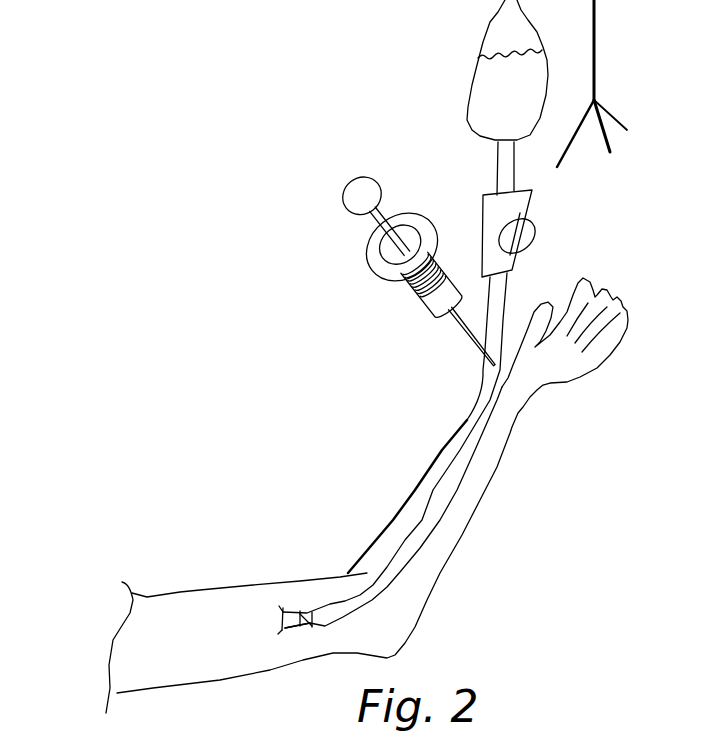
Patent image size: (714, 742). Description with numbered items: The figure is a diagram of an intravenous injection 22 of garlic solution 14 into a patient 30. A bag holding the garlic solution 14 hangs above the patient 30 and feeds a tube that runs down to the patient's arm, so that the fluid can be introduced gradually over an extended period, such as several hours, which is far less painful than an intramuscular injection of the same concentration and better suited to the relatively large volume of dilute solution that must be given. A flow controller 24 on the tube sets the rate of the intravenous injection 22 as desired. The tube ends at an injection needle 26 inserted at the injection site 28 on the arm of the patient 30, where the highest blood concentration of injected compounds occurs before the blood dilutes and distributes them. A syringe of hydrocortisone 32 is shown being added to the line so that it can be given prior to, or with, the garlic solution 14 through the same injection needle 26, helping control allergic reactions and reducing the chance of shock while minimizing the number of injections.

The garlic solution 14 is at (501, 97).
The intravenous (IV) injection 22 is at (292, 536).
The flow controller 24 is at (512, 213).
The injection needle 26 is at (305, 627).
The injection site 28 is at (250, 580).
The patient 30 is at (130, 580).
The hydrocortisone 32 is at (428, 303).